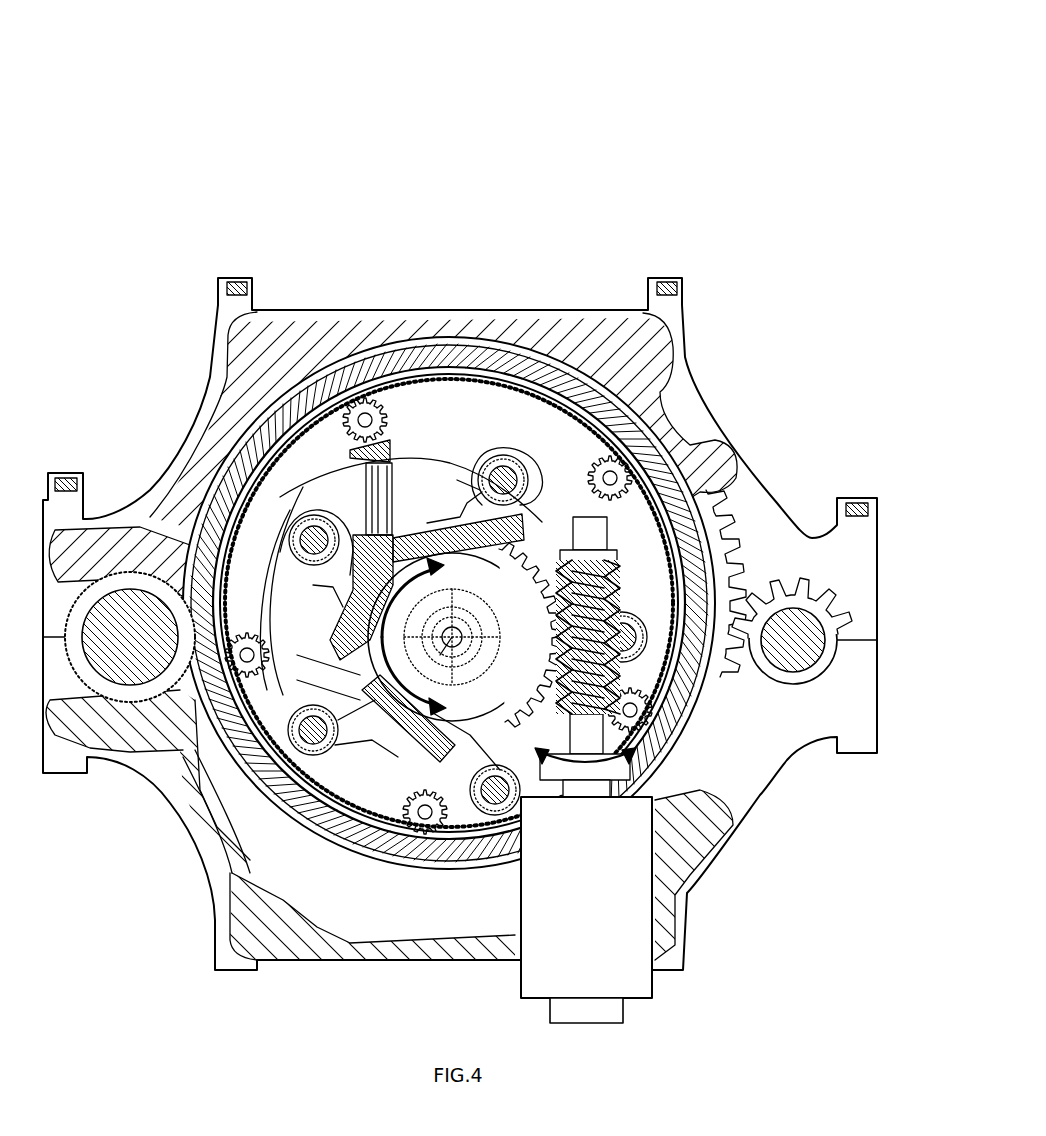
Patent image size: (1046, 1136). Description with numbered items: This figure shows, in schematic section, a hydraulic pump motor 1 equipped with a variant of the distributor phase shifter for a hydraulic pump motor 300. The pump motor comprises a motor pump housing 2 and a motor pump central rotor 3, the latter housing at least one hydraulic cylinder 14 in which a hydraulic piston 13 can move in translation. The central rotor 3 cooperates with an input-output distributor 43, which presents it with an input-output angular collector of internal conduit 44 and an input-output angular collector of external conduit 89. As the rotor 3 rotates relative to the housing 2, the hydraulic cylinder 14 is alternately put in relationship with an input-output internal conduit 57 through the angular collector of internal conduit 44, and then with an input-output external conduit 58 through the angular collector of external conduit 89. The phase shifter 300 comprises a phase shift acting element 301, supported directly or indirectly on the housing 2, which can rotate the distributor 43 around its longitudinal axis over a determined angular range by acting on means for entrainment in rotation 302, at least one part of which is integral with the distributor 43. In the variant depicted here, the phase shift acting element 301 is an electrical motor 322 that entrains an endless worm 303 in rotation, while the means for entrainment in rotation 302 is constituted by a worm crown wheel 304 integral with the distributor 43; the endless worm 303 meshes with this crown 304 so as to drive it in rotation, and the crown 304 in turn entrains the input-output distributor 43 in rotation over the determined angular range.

The hydraulic pump motor 1 is at (727, 155).
The motor pump housing 2 is at (686, 401).
The motor pump central rotor 3 is at (410, 525).
The hydraulic piston 13 is at (355, 595).
The hydraulic cylinder 14 is at (358, 588).
The input-output distributor 43 is at (470, 600).
The input-output angular collector of internal conduit 44 is at (270, 708).
The input-output internal conduit 57 is at (300, 748).
The input-output external conduit 58 is at (455, 585).
The input-output angular collector of external conduit 89 is at (495, 577).
The distributor phase shifter for a hydraulic pump motor 300 is at (628, 673).
The phase shift acting element 301 is at (641, 1004).
The means for entrainment in rotation 302 is at (628, 582).
The endless worm 303 is at (630, 600).
The worm crown wheel 304 is at (500, 700).
The electrical motor 322 is at (617, 890).